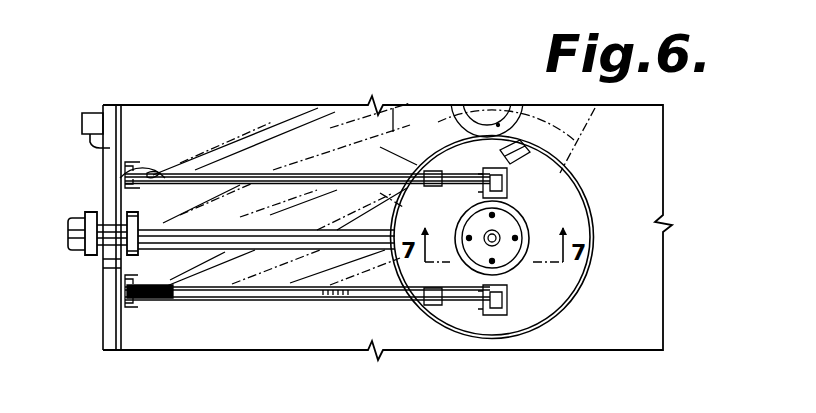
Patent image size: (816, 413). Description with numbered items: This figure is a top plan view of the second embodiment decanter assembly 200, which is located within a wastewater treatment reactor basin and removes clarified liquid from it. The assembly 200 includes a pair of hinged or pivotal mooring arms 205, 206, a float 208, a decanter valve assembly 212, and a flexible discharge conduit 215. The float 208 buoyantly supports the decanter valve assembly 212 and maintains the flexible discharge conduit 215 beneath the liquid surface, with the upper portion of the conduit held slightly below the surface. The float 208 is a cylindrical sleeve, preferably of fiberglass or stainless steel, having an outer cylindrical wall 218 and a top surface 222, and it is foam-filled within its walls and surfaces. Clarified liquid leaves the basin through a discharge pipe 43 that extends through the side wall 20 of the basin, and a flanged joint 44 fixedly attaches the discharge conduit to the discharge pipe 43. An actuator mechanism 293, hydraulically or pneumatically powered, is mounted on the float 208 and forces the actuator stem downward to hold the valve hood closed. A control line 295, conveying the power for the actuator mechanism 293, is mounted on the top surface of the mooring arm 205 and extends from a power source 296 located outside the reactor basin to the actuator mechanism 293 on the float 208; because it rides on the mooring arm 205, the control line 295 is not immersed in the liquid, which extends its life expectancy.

The decanter assembly 200 is at (645, 143).
The side wall 20 is at (104, 174).
The power source 296 is at (87, 113).
The mooring arm 205 is at (220, 160).
The flanged joint 44 is at (133, 217).
The discharge pipe 43 is at (72, 246).
The flexible discharge conduit 215 is at (366, 250).
The mooring arm 206 is at (237, 273).
The top surface 222 is at (445, 309).
The float 208 is at (551, 315).
The outer cylindrical wall 218 is at (580, 201).
The decanter valve assembly 212 is at (526, 208).
The control line 295 is at (492, 238).
The actuator mechanism 293 is at (496, 240).